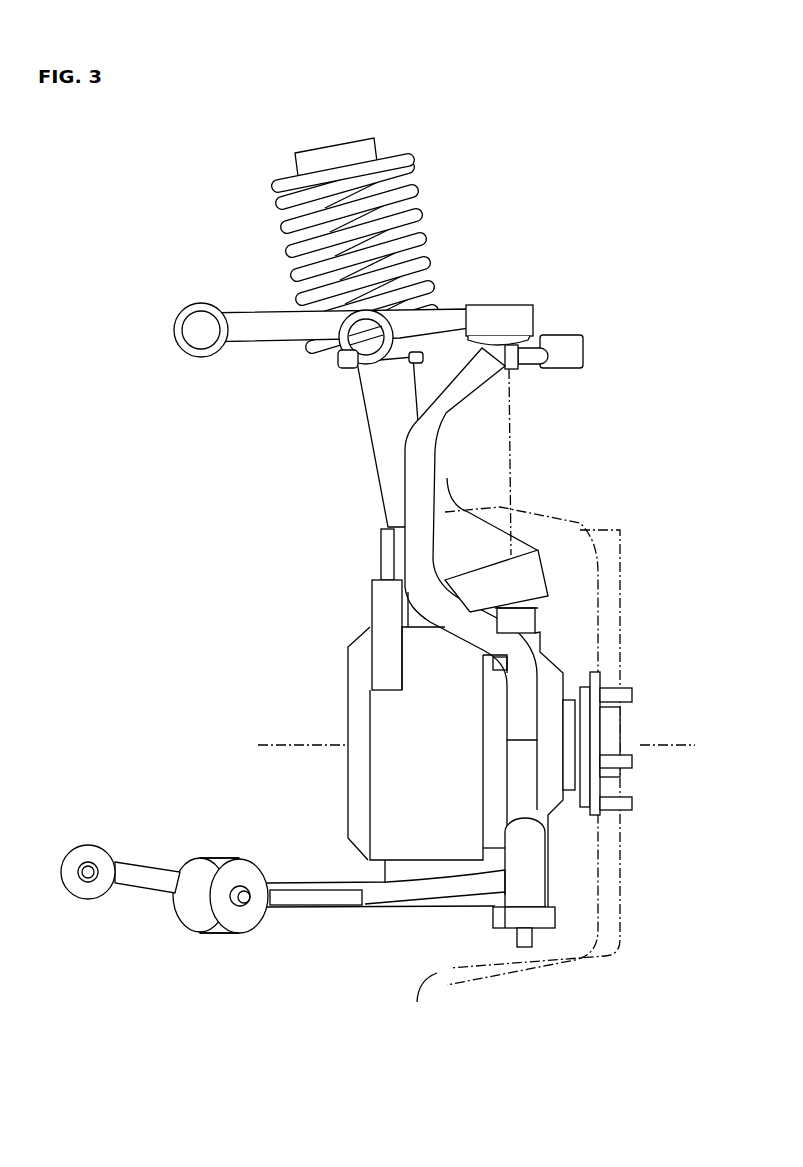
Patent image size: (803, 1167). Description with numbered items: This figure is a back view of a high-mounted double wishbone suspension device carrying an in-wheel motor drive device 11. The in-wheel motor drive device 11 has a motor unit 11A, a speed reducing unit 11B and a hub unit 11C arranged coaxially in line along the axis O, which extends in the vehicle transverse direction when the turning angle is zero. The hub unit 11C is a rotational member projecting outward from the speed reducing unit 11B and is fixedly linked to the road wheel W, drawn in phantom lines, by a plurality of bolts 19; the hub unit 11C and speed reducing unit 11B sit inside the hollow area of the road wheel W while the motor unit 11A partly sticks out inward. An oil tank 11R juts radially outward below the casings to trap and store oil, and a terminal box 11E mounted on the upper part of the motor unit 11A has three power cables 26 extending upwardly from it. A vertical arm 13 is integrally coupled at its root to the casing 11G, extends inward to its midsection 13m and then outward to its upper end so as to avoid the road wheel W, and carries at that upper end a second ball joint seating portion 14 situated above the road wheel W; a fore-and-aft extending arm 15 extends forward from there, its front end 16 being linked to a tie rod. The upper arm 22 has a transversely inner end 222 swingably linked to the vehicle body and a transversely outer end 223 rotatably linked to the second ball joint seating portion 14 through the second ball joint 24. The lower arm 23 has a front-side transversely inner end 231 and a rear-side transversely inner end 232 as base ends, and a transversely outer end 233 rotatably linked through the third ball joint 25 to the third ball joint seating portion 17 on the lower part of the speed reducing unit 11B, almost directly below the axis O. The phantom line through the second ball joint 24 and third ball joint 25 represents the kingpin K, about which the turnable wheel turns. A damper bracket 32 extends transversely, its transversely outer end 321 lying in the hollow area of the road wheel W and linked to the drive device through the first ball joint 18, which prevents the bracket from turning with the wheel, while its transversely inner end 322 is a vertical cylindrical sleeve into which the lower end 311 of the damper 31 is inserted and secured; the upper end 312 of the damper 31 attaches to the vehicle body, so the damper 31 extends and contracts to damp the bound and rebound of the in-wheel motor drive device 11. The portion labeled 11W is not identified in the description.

The in-wheel motor drive device 11 is at (382, 743).
The motor unit 11A is at (380, 798).
The speed reducing unit 11B is at (473, 808).
The hub unit 11C is at (598, 813).
The terminal box 11E is at (380, 612).
The casing 11G is at (552, 812).
The oil tank 11R is at (494, 906).
The knuckle wheel-side portion 11W is at (548, 670).
The vertical arm 13 is at (427, 430).
The midsection 13m is at (412, 570).
The second ball joint seating portion 14 is at (508, 368).
The fore-and-aft extending arm 15 is at (548, 358).
The front end 16 is at (575, 355).
The third ball joint seating portion 17 is at (530, 865).
The first ball joint 18 is at (548, 595).
The bolts 19 is at (632, 695).
The upper arm 22 is at (447, 307).
The transversely inner end 222 is at (343, 357).
The transversely outer end 223 is at (523, 318).
The lower arm 23 is at (277, 900).
The front-side transversely inner end 231 is at (87, 852).
The rear-side transversely inner end 232 is at (217, 927).
The transversely outer end 233 is at (428, 890).
The second ball joint 24 is at (505, 317).
The third ball joint 25 is at (547, 885).
The power cables 26 is at (380, 548).
The damper 31 is at (295, 273).
The lower end 311 is at (387, 448).
The upper end 312 is at (303, 158).
The damper bracket 32 is at (493, 572).
The transversely outer end 321 is at (525, 568).
The transversely inner end 322 is at (408, 597).
The road wheel W is at (620, 607).
The axis O is at (479, 745).
The kingpin K is at (527, 947).